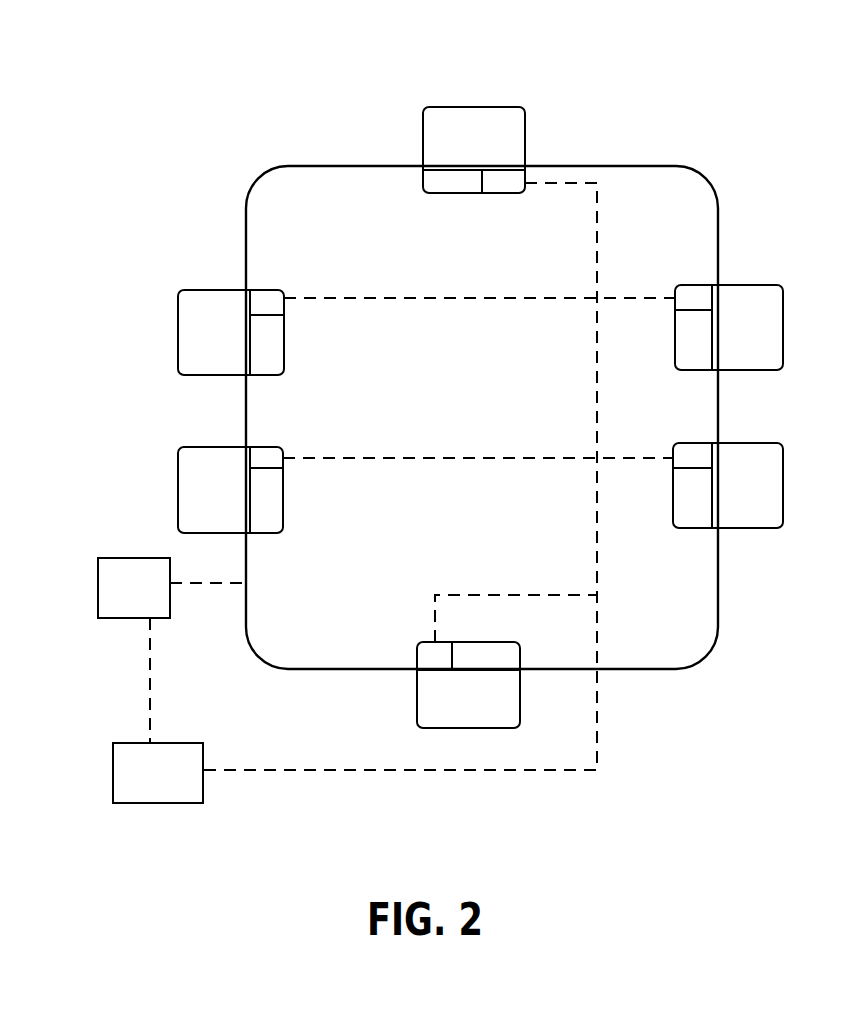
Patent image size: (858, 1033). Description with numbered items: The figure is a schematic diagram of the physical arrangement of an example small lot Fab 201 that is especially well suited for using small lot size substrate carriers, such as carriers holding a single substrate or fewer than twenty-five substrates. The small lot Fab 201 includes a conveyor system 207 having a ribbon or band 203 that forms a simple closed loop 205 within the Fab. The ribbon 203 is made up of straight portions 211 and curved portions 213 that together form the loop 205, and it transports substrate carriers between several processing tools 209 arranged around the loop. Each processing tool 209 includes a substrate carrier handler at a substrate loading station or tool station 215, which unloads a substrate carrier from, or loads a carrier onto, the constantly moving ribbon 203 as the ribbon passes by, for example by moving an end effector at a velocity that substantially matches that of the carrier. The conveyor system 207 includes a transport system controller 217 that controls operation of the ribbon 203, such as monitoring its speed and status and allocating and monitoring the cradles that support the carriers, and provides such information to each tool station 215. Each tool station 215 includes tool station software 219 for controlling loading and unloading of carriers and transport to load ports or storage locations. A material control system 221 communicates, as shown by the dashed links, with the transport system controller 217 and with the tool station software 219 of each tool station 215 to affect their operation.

The small lot Fab 201 is at (697, 85).
The ribbon 203 is at (482, 418).
The loop 205 is at (719, 614).
The conveyor system 207 is at (545, 148).
The processing tool 209 is at (484, 415).
The straight portion 211 is at (388, 163).
The curved portion 213 is at (273, 175).
The tool station 215 is at (476, 188).
The transport system controller 217 is at (97, 602).
The tool station software 219 is at (516, 196).
The material control system 221 is at (180, 803).